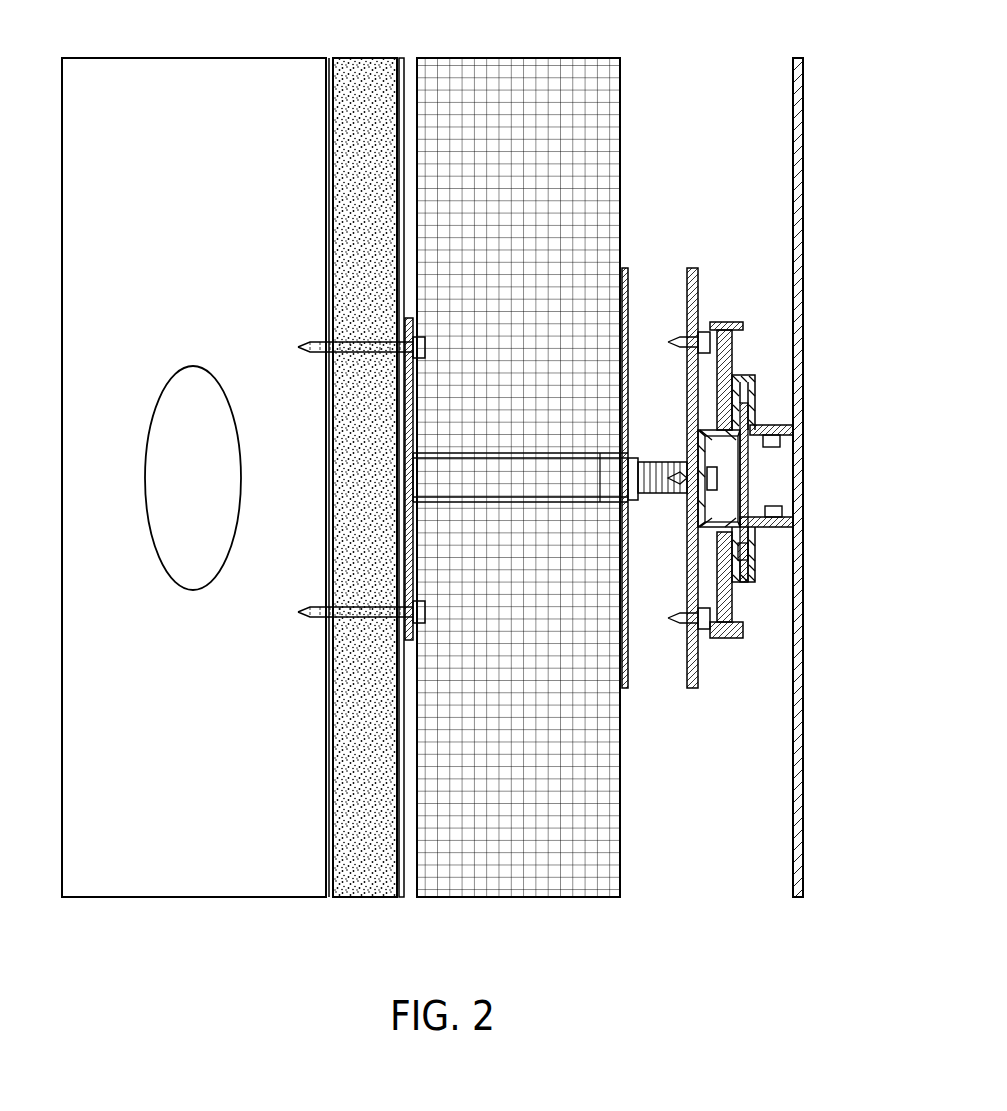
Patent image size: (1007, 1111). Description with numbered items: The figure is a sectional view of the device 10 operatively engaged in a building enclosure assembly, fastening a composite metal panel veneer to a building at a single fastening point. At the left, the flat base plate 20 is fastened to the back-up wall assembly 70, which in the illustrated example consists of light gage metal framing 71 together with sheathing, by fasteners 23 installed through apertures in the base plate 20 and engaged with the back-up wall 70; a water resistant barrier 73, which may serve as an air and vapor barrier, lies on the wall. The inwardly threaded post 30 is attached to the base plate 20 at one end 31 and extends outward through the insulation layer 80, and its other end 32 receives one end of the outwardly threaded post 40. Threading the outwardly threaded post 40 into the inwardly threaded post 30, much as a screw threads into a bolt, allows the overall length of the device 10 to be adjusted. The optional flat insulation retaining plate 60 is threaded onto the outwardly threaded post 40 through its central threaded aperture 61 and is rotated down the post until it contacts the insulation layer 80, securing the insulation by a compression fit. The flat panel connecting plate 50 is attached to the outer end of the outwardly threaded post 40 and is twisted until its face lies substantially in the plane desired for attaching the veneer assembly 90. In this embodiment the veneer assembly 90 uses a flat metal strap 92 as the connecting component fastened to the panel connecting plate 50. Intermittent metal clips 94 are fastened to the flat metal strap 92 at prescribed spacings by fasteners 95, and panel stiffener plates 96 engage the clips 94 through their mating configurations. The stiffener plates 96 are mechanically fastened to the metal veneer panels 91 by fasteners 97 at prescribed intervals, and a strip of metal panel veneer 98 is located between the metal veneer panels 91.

The device 10 is at (567, 467).
The flat base plate 20 is at (392, 505).
The fasteners 23 is at (298, 347).
The inwardly threaded post 30 is at (480, 504).
The end of inwardly threaded post 31 is at (400, 432).
The other end of inwardly threaded post 32 is at (606, 482).
The outwardly threaded post 40 is at (660, 495).
The flat panel connecting plate 50 is at (689, 268).
The flat insulation retaining plate 60 is at (628, 282).
The threaded aperture 61 is at (633, 456).
The back-up wall assembly 70 is at (352, 58).
The light gage metal framing 71 is at (178, 58).
The water resistant barrier 73 is at (404, 65).
The insulation layer 80 is at (513, 58).
The veneer assembly 90 is at (773, 463).
The metal veneer panels 91 is at (803, 340).
The flat metal strap 92 is at (702, 278).
The intermittent metal clips 94 is at (730, 640).
The fasteners 95 is at (712, 478).
The panel stiffener plates 96 is at (752, 377).
The fasteners 97 is at (775, 426).
The strip of metal panel veneer 98 is at (748, 497).